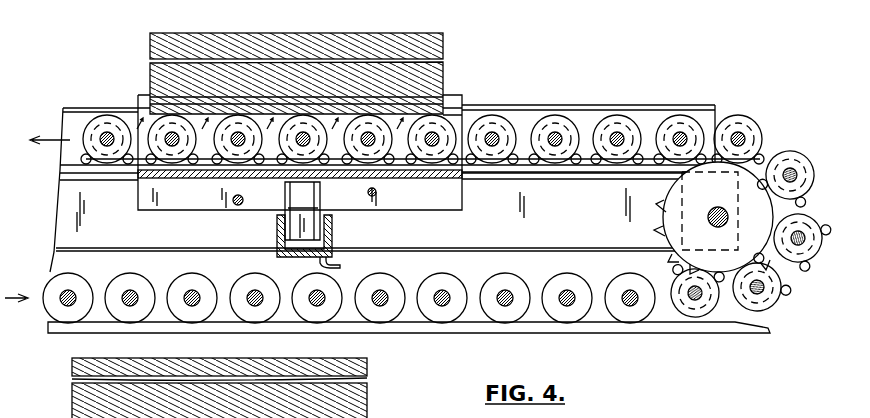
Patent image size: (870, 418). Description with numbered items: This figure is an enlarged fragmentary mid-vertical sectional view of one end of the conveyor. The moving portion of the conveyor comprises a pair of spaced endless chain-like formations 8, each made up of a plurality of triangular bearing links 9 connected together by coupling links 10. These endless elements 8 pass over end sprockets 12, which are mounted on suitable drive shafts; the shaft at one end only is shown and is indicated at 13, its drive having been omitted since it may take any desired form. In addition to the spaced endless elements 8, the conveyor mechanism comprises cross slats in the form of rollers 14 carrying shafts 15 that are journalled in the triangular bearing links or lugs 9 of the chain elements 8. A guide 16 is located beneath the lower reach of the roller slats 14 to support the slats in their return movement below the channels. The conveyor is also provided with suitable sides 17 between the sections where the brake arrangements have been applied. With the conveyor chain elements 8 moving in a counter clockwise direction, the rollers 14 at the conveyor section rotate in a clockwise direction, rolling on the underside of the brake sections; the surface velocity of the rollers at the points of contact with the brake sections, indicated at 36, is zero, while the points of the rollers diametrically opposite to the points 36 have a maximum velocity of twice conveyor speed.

The endless chain-like formations 8 is at (534, 183).
The triangular bearing links 9 is at (494, 127).
The coupling links 10 is at (522, 158).
The end sprockets 12 is at (755, 218).
The drive shaft 13 is at (727, 225).
The rollers 14 is at (682, 138).
The shafts 15 is at (690, 136).
The guide 16 is at (683, 331).
The sides 17 is at (595, 107).
The points of contact 36 is at (427, 117).